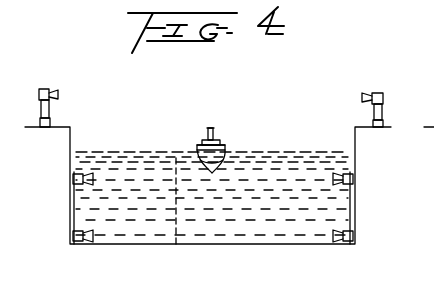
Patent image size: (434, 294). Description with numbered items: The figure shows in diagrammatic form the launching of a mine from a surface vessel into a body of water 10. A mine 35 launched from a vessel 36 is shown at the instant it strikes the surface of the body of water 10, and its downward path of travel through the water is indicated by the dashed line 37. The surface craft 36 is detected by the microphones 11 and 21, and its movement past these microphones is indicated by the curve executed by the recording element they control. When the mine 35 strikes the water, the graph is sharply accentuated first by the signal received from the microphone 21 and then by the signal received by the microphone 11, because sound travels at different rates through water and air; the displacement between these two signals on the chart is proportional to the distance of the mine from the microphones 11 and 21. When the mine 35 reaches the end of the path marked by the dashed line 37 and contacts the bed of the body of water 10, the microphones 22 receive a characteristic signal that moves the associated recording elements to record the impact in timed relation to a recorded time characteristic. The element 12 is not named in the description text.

The body of water 10 is at (276, 162).
The microphone 11 is at (58, 95).
The transducer housing 12 is at (50, 118).
The microphone 21 is at (87, 174).
The microphone 22 is at (92, 246).
The mine 35 is at (195, 151).
The vessel 36 is at (226, 150).
The dashed line 37 is at (176, 224).